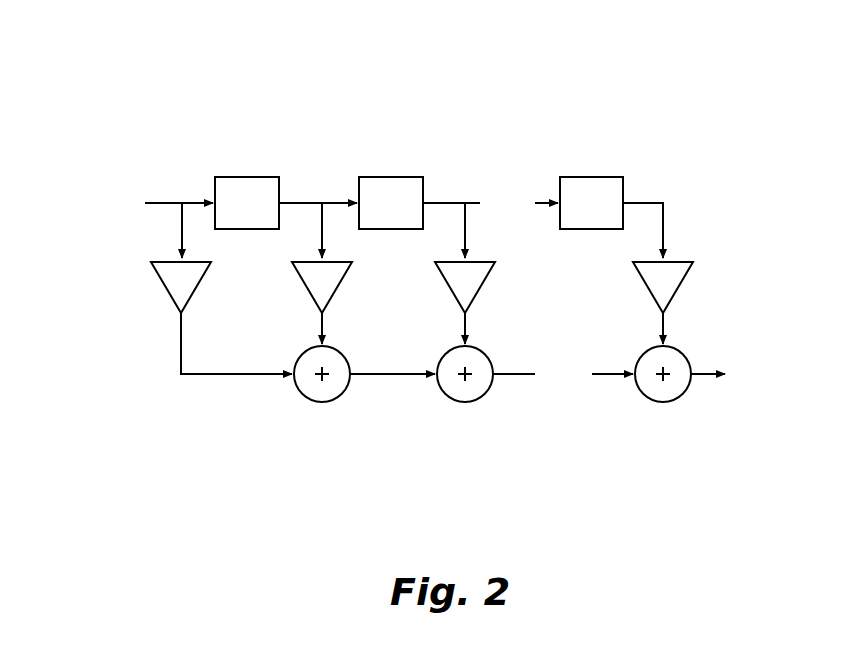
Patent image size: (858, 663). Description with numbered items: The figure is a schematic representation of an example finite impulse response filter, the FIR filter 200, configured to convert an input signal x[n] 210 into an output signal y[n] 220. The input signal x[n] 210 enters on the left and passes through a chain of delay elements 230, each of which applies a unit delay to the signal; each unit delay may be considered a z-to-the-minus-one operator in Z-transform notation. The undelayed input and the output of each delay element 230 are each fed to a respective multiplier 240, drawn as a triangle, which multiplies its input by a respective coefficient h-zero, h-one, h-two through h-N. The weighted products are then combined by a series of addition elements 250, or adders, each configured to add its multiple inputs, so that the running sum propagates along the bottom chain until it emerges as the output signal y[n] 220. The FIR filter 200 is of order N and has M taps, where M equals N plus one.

The FIR filter 200 is at (665, 92).
The input signal x[n] 210 is at (105, 180).
The output signal y[n] 220 is at (773, 395).
The delay element 230 is at (247, 177).
The multiplier 240 is at (164, 287).
The addition element 250 is at (322, 402).